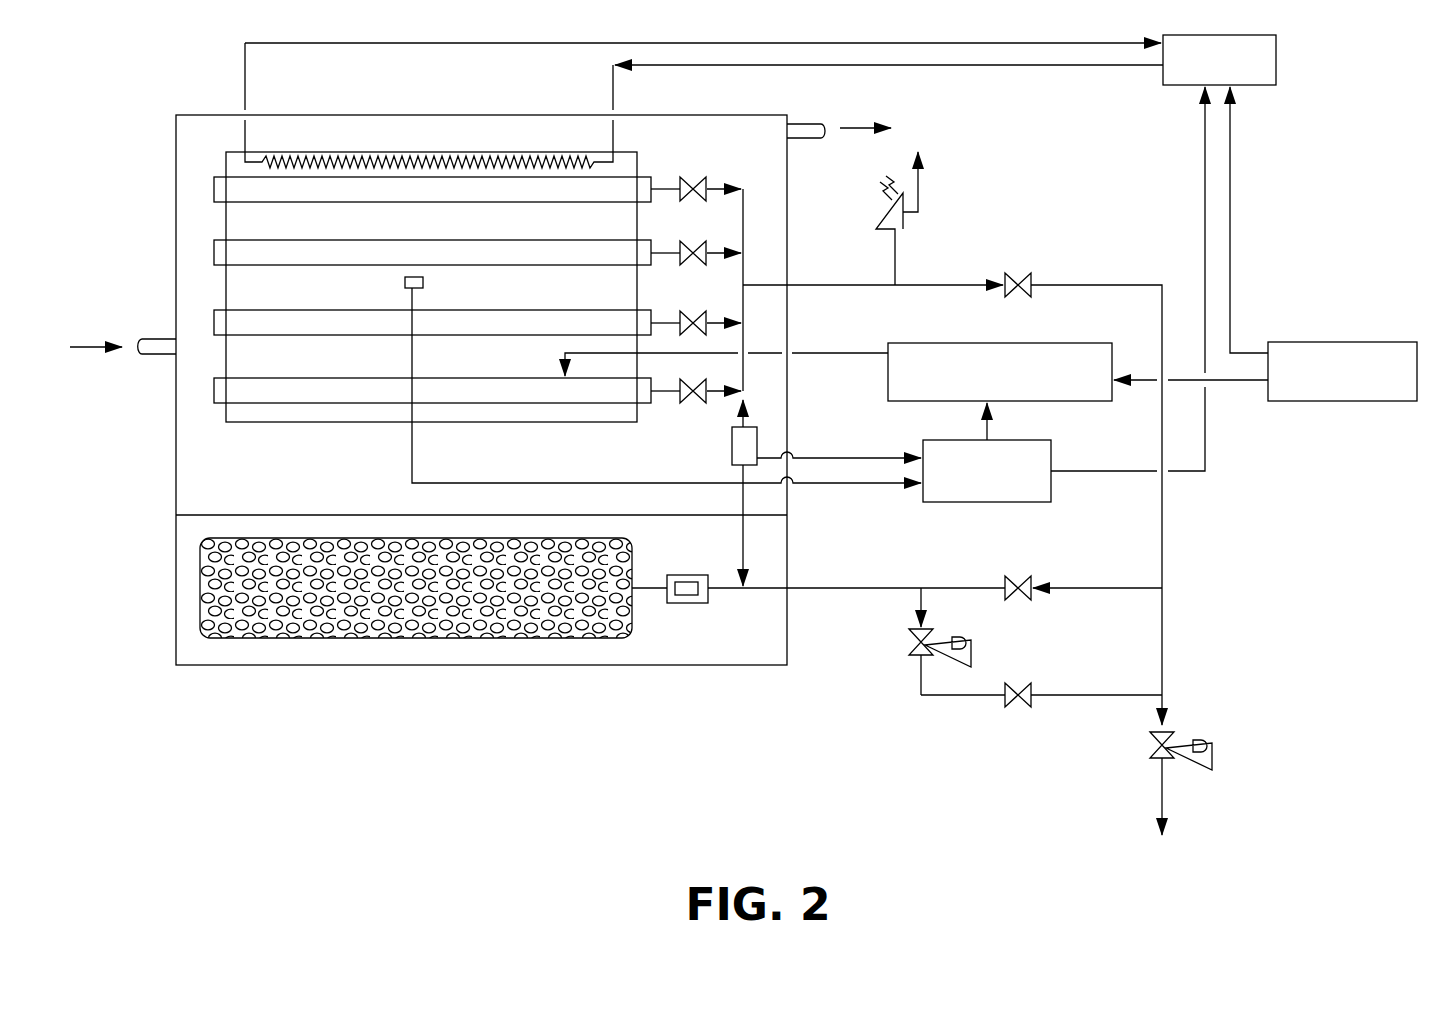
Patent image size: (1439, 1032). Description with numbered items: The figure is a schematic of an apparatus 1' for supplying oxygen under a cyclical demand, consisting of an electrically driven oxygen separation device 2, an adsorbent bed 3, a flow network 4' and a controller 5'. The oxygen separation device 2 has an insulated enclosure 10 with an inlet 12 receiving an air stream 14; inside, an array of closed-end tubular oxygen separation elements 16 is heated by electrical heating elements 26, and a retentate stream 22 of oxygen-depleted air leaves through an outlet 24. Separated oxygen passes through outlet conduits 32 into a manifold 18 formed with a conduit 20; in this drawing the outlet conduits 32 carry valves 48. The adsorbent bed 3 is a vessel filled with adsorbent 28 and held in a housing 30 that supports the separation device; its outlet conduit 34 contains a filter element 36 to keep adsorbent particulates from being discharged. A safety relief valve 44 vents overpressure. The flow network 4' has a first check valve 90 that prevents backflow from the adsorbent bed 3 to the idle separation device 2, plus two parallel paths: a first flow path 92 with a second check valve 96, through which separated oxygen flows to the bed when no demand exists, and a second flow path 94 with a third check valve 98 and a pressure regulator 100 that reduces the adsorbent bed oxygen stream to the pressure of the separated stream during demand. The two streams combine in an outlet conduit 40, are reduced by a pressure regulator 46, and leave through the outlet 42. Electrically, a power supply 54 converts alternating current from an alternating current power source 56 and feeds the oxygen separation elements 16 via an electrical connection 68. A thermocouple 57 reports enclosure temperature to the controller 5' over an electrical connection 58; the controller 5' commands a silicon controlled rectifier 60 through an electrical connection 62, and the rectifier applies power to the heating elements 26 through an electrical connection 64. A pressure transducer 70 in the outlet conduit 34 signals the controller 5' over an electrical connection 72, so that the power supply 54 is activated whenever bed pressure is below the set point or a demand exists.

The apparatus 1' is at (569, 782).
The electrically driven oxygen separation device 2 is at (516, 110).
The adsorbent bed 3 is at (498, 677).
The flow network 4' is at (1242, 532).
The controller 5' is at (985, 506).
The insulated enclosure 10 is at (370, 114).
The inlet 12 is at (152, 337).
The air stream 14 is at (85, 345).
The oxygen separation elements 16 is at (214, 190).
The manifold 18 is at (766, 224).
The conduit 20 is at (745, 272).
The retentate stream 22 is at (862, 126).
The outlet 24 is at (808, 122).
The heating elements 26 is at (455, 152).
The adsorbent 28 is at (340, 610).
The housing 30 is at (176, 578).
The outlet conduits 32 is at (728, 178).
The outlet conduit 34 is at (640, 586).
The filter element 36 is at (685, 604).
The outlet conduit 40 is at (1165, 706).
The outlet 42 is at (1165, 800).
The safety relief valve 44 is at (903, 230).
The pressure regulator 46 is at (1215, 760).
The tube valves 48 is at (686, 178).
The power supply 54 is at (1065, 403).
The alternating current power source 56 is at (1395, 392).
The thermocouple 57 is at (423, 283).
The electrical connection 58 is at (580, 484).
The silicon controlled rectifier 60 is at (1172, 82).
The electrical connection 62 is at (1200, 445).
The electrical connection 64 is at (1063, 67).
The electrical connection 68 is at (812, 355).
The pressure transducer 70 is at (740, 458).
The electrical connection 72 is at (880, 448).
The first check valve 90 is at (1027, 262).
The first flow path 92 is at (1075, 585).
The second flow path 94 is at (1085, 696).
The second check valve 96 is at (1022, 597).
The third check valve 98 is at (1022, 705).
The pressure regulator 100 is at (905, 650).